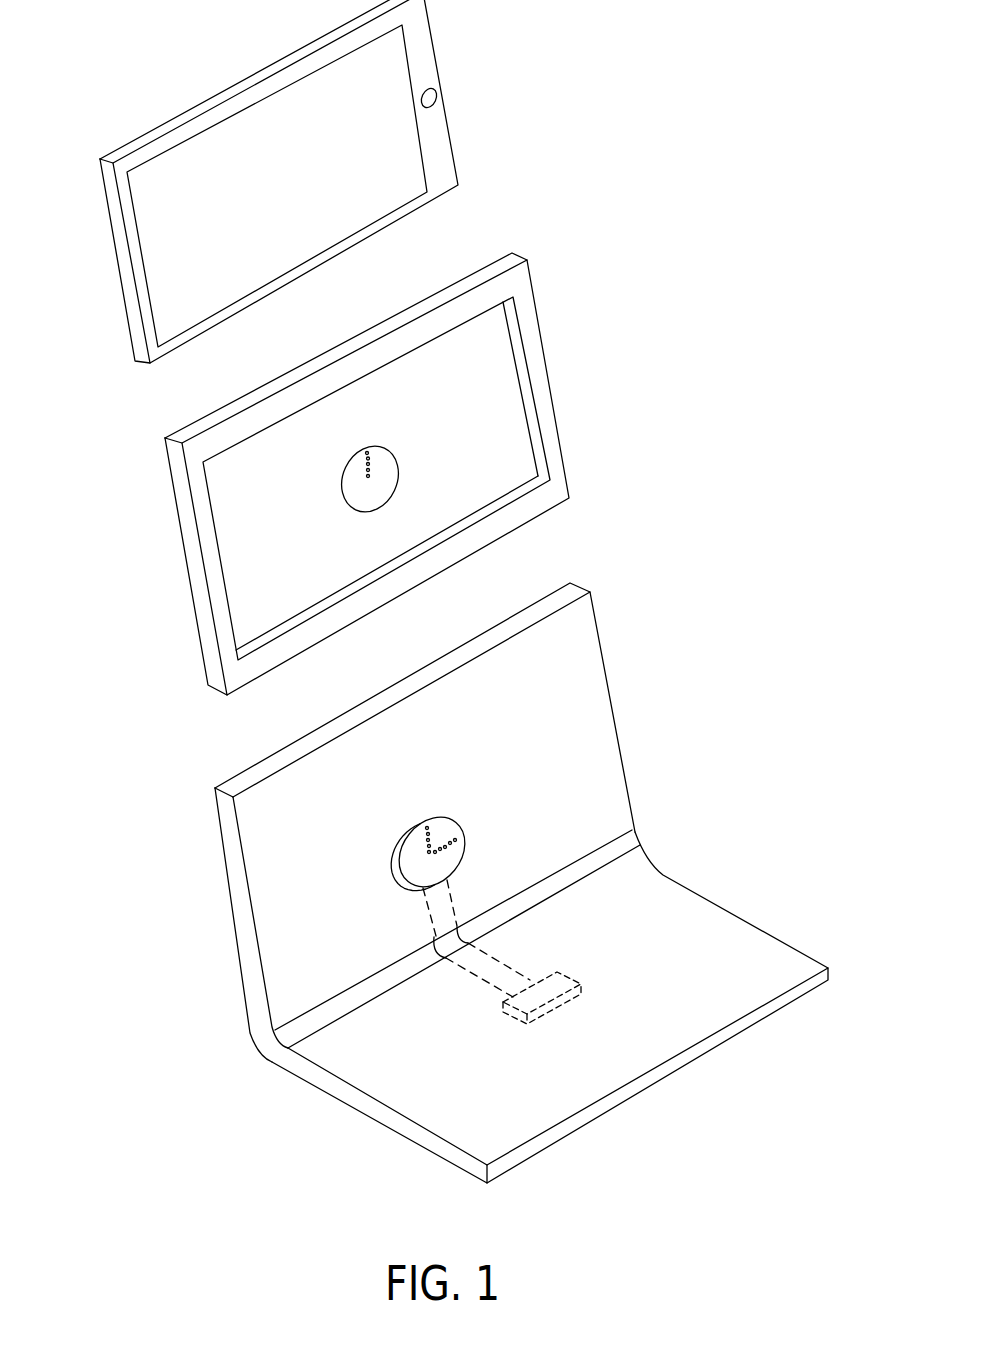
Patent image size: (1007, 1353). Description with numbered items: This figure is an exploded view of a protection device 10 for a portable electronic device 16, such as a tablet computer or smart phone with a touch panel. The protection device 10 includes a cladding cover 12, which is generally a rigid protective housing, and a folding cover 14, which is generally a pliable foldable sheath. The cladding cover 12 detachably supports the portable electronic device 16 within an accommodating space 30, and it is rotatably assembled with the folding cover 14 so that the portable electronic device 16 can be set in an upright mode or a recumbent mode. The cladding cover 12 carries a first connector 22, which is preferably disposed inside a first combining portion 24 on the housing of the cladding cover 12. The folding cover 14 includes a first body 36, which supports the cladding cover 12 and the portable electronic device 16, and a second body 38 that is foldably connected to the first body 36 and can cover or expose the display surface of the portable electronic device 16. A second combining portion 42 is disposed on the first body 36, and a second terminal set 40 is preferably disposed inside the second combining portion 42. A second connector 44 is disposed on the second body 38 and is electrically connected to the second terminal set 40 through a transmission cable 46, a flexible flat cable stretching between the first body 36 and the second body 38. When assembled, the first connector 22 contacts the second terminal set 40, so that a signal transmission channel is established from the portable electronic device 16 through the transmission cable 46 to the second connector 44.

The protection device 10 is at (122, 532).
The cladding cover 12 is at (384, 464).
The folding cover 14 is at (500, 883).
The portable electronic device 16 is at (197, 165).
The first connector 22 is at (363, 460).
The first combining portion 24 is at (387, 467).
The accommodating space 30 is at (467, 438).
The first body 36 is at (582, 748).
The second body 38 is at (770, 957).
The second terminal set 40 is at (433, 837).
The second combining portion 42 is at (413, 867).
The second connector 44 is at (540, 995).
The transmission cable 46 is at (433, 912).